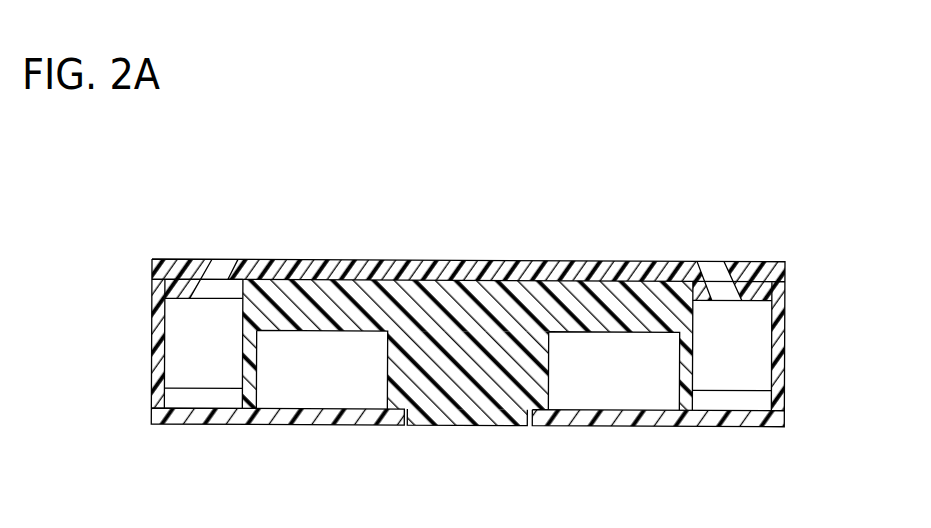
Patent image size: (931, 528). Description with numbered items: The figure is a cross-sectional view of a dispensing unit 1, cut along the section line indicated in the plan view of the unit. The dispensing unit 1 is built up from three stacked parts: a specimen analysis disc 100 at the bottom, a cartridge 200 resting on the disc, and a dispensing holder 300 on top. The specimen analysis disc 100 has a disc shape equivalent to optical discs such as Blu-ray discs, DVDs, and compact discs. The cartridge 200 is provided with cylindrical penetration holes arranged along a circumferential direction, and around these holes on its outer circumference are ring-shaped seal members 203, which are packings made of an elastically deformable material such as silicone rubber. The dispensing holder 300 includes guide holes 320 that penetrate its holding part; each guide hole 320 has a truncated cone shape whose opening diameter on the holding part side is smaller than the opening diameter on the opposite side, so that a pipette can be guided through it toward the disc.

The dispensing unit 1 is at (763, 240).
The specimen analysis disc 100 is at (756, 421).
The cartridge 200 is at (512, 302).
The seal member 203 is at (158, 391).
The dispensing holder 300 is at (470, 259).
The guide hole 320 is at (238, 259).